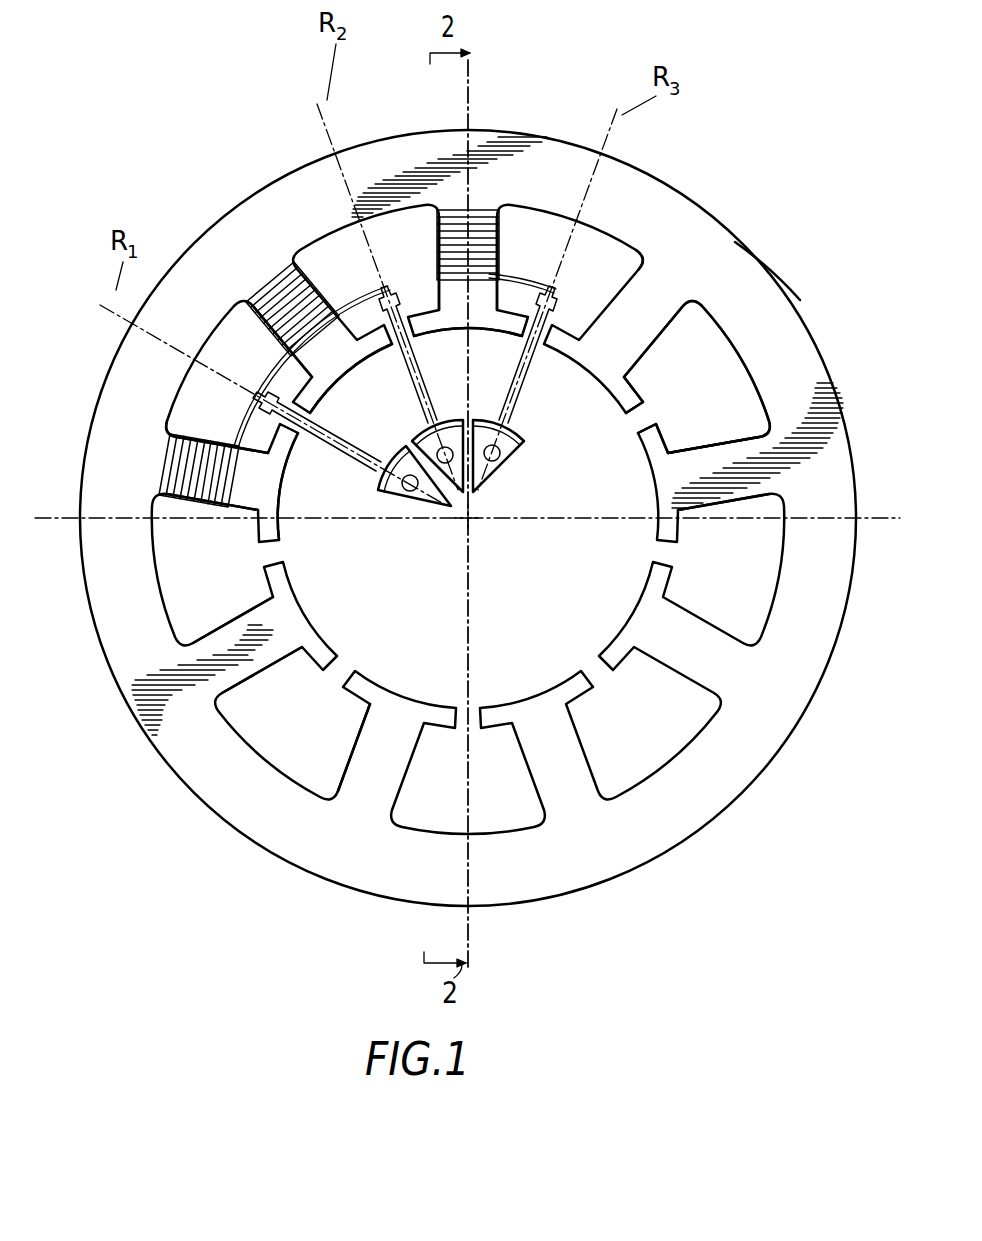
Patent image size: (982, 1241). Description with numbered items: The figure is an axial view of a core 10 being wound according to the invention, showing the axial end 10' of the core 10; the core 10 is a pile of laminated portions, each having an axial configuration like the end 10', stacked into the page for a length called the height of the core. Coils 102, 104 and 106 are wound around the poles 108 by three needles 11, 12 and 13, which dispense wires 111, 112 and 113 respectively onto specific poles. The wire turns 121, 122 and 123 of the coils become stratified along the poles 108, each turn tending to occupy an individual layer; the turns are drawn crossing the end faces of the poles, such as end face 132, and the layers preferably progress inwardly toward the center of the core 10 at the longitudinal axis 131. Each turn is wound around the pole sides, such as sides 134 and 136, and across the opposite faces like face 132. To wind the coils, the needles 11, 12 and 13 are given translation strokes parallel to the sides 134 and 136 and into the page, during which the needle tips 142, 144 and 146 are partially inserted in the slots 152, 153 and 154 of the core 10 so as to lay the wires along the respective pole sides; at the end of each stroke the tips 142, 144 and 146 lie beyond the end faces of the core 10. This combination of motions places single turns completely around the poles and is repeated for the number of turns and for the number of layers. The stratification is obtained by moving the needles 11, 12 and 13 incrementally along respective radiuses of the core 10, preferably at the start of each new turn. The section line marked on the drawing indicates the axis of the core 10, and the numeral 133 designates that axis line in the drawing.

The core 10 is at (468, 489).
The axial end 10' is at (769, 261).
The needle 11 is at (390, 512).
The needle 12 is at (458, 500).
The needle 13 is at (512, 457).
The coil 102 is at (181, 524).
The coil 104 is at (271, 335).
The coil 106 is at (503, 263).
The pole 108 is at (373, 763).
The wire 111 is at (302, 432).
The wire 112 is at (367, 333).
The wire 113 is at (507, 357).
The wire turn 121 is at (197, 498).
The wire turn 122 is at (306, 258).
The wire turn 123 is at (498, 226).
The longitudinal axis 131 is at (498, 525).
The end face 132 is at (757, 451).
The section axis line 133 is at (473, 95).
The pole side 134 is at (719, 498).
The pole side 136 is at (714, 448).
The needle tip 142 is at (355, 505).
The needle tip 144 is at (414, 368).
The needle tip 146 is at (522, 393).
The slot 152 is at (162, 428).
The slot 153 is at (408, 222).
The slot 154 is at (631, 252).